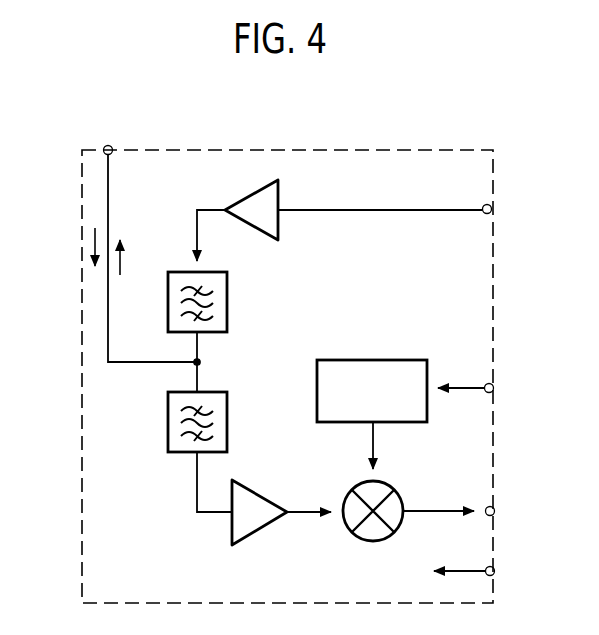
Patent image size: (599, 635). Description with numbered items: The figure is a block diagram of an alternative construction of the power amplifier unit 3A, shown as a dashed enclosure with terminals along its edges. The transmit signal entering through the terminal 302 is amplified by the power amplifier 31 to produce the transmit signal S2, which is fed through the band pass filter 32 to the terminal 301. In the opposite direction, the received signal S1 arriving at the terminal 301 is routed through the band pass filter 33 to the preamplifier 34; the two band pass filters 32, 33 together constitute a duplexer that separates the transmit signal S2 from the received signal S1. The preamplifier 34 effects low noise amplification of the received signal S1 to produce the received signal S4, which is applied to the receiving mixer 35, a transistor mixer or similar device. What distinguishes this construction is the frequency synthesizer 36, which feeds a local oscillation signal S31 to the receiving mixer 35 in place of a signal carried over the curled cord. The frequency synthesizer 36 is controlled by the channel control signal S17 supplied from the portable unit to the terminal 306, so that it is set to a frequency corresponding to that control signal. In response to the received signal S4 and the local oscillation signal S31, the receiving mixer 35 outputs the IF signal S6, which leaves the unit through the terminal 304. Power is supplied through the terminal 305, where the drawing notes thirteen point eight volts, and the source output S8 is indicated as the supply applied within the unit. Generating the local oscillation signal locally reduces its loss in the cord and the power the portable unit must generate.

The power amplifier unit 3A is at (209, 148).
The terminal 301 is at (112, 148).
The terminal 302 is at (491, 207).
The terminal 304 is at (494, 511).
The terminal 305 is at (494, 571).
The terminal 306 is at (494, 388).
The power amplifier 31 is at (280, 205).
The band pass filter 32 is at (228, 318).
The band pass filter 33 is at (228, 420).
The preamplifier 34 is at (266, 500).
The receiving mixer 35 is at (396, 496).
The frequency synthesizer 36 is at (368, 359).
The received signal S1 is at (93, 242).
The transmit signal S2 is at (122, 262).
The received signal S4 is at (382, 212).
The IF signal S6 is at (425, 513).
The source output S8 is at (458, 570).
The channel control signal S17 is at (458, 387).
The local oscillation signal S31 is at (375, 440).